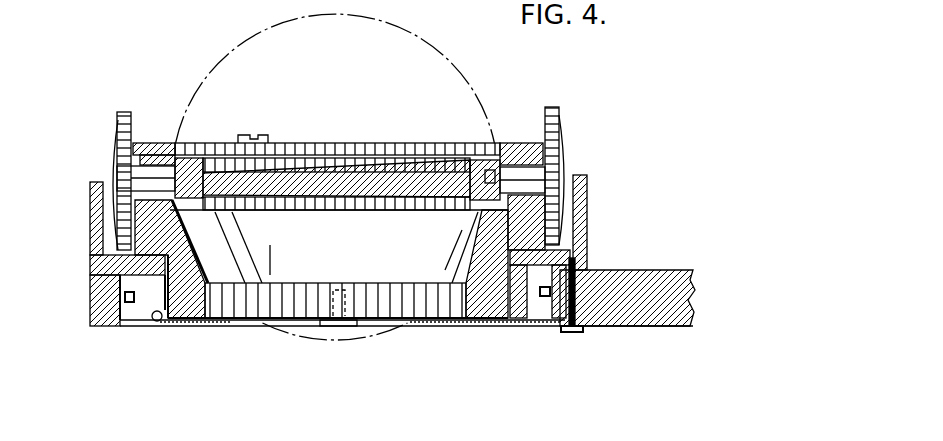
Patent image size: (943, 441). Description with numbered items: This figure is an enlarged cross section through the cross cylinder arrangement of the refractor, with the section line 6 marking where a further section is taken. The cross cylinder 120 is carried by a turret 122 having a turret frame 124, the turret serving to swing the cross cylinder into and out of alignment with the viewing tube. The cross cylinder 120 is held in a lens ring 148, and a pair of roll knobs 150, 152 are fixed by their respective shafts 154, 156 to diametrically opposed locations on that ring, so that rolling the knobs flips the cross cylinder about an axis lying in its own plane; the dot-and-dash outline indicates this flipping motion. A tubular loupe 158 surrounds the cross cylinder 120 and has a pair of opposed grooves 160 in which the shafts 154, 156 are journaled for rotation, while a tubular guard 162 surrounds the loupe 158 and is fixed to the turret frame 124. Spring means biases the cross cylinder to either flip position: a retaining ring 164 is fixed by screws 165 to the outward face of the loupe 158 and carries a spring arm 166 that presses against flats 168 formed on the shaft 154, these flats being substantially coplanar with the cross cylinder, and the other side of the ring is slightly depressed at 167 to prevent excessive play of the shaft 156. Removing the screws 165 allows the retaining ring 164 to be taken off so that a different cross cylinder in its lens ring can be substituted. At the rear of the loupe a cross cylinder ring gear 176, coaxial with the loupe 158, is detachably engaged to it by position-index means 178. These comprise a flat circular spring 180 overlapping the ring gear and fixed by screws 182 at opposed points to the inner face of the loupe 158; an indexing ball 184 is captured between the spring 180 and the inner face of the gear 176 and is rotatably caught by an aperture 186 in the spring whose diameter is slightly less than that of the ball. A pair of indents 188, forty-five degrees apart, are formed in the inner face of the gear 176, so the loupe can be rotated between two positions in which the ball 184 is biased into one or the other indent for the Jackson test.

The section line 6- 6 is at (143, 87).
The cross cylinder 120 is at (340, 183).
The turret 122 is at (616, 255).
The turret frame 124 is at (647, 326).
The lens ring 148 is at (482, 160).
The roll knob 150 is at (118, 113).
The roll knob 152 is at (560, 116).
The shaft 154 is at (140, 180).
The shaft 156 is at (538, 178).
The tubular loupe 158 is at (198, 312).
The grooves 160 is at (125, 224).
The tubular guard 162 is at (100, 197).
The retaining ring 164 is at (140, 143).
The screws 165 is at (258, 137).
The spring arm 166 is at (158, 150).
The depressed portion of retaining ring 167 is at (520, 152).
The flats 168 is at (188, 233).
The cross cylinder ring gear 176 is at (125, 297).
The position-index means 178 is at (478, 324).
The flat circular spring 180 is at (128, 326).
The screws 182 is at (357, 326).
The indexing ball 184 is at (160, 323).
The aperture 186 is at (150, 327).
The indents 188 is at (198, 258).